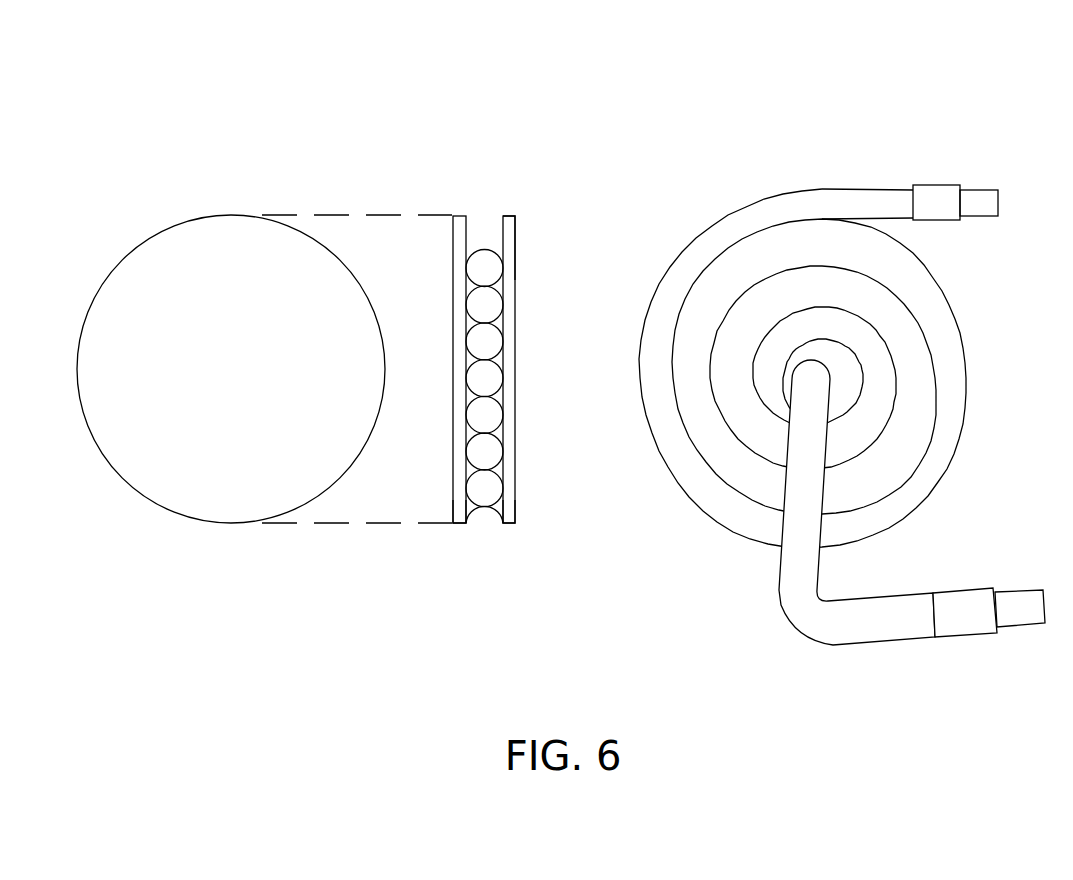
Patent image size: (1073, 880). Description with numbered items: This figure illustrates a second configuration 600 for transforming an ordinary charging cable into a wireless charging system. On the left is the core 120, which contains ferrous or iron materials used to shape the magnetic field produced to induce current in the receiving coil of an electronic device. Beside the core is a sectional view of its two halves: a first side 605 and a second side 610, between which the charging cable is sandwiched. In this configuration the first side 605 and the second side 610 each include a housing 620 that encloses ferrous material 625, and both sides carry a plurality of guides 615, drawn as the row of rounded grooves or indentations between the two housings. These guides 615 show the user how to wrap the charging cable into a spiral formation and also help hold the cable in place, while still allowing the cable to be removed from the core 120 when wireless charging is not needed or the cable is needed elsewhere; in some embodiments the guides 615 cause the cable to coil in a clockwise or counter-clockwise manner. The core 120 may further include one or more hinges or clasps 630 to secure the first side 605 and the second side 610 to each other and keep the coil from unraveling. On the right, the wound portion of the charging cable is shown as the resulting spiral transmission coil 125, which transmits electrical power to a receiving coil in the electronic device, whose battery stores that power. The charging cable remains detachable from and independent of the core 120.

The core 120 is at (118, 262).
The transmission coil 125 is at (966, 362).
The second configuration 600 is at (848, 348).
The first side 605 is at (453, 337).
The second side 610 is at (517, 238).
The guides 615 is at (468, 246).
The housing 620 is at (453, 508).
The ferrous material 625 is at (518, 330).
The hinges or clasps 630 is at (493, 524).